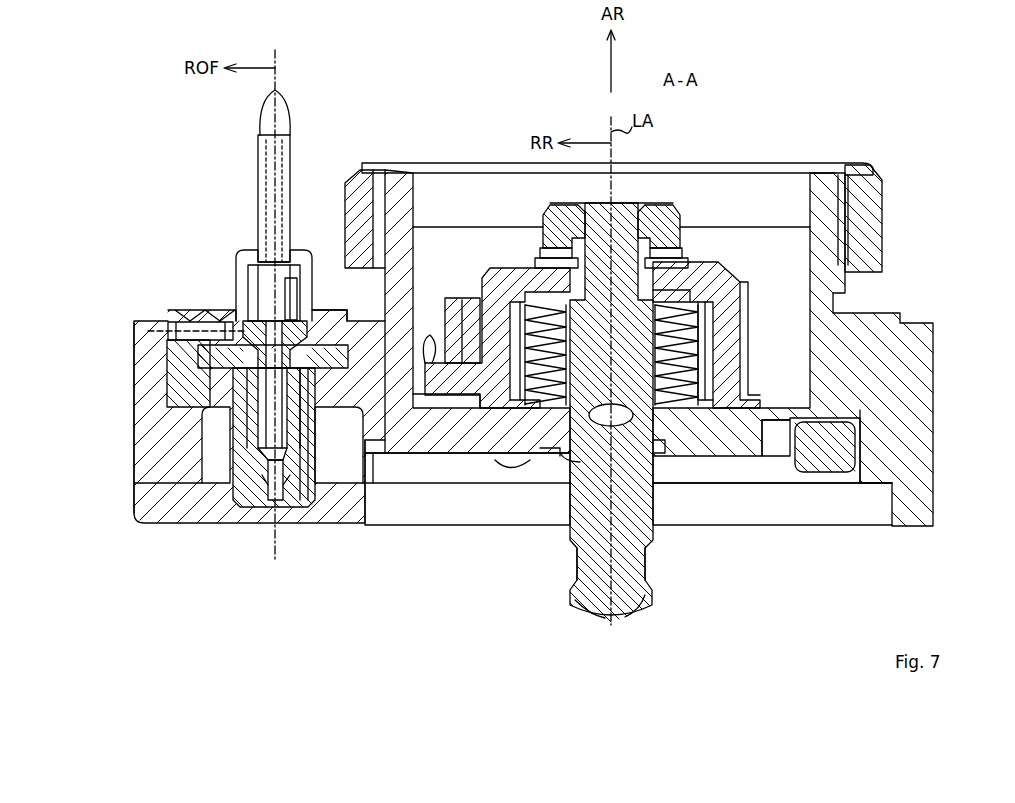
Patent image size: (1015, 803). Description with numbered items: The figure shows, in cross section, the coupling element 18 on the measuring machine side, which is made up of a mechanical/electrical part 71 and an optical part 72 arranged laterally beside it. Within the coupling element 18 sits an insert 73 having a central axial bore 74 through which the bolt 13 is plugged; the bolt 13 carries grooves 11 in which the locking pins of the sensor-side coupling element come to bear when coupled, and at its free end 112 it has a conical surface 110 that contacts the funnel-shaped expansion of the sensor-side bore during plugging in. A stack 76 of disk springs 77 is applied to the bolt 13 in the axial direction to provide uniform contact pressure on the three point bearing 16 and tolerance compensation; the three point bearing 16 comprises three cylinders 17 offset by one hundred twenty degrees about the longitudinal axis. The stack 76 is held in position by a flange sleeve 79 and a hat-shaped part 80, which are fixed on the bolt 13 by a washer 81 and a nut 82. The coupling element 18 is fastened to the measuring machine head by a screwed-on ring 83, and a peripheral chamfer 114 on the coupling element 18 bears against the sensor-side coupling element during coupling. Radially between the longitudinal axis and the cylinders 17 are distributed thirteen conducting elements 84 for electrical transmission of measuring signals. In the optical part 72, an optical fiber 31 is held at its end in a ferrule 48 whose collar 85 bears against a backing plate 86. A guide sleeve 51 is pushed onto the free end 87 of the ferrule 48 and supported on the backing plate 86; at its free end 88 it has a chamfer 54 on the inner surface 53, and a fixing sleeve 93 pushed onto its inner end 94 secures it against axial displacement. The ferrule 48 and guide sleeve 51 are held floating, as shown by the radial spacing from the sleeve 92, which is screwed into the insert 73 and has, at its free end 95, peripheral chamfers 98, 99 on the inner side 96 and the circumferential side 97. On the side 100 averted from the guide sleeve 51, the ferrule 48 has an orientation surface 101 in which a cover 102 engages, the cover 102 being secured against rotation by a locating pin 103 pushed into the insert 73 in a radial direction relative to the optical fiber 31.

The grooves 11 is at (575, 565).
The bolt 13 is at (614, 618).
The three point bearing 16 is at (862, 473).
The cylinders 17 is at (500, 470).
The coupling element on the measuring machine side 18 is at (925, 205).
The optical fiber 31 is at (283, 106).
The ferrule 48 is at (258, 220).
The guide sleeve 51 is at (272, 510).
The inner surface 53 is at (282, 505).
The chamfer 54 is at (290, 505).
The mechanical/electrical part 71 is at (779, 530).
The optical part 72 is at (336, 470).
The insert 73 is at (895, 300).
The central axial bore 74 is at (660, 445).
The stack of disk springs 76 is at (520, 318).
The disk springs 77 is at (692, 350).
The flange sleeve 79 is at (575, 290).
The hat-shaped part 80 is at (690, 262).
The washer 81 is at (684, 250).
The nut 82 is at (658, 205).
The ring 83 is at (868, 165).
The conducting elements 84 is at (780, 470).
The collar 85 is at (246, 288).
The backing plate 86 is at (230, 347).
The free end 87 is at (200, 455).
The free end 88 is at (266, 486).
The sleeve 92 is at (240, 500).
The fixing sleeve 93 is at (240, 398).
The inner end 94 is at (325, 335).
The free end 95 is at (258, 500).
The inner side 96 is at (250, 428).
The circumferential side 97 is at (320, 485).
The peripheral chamfer 98 is at (305, 490).
The peripheral chamfer 99 is at (170, 478).
The side averted from the guide sleeve 100 is at (255, 268).
The orientation surface 101 is at (298, 300).
The cover 102 is at (302, 250).
The locating pin 103 is at (180, 318).
The conical surface 110 is at (590, 620).
The free end 112 is at (634, 615).
The peripheral chamfer 114 is at (885, 500).